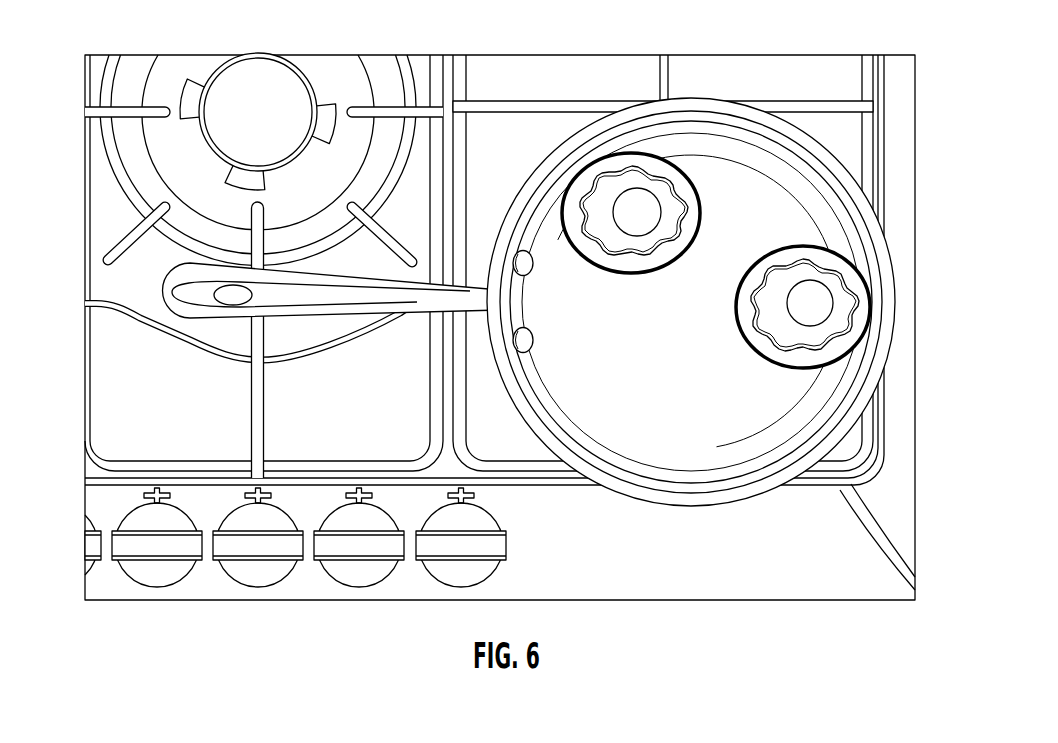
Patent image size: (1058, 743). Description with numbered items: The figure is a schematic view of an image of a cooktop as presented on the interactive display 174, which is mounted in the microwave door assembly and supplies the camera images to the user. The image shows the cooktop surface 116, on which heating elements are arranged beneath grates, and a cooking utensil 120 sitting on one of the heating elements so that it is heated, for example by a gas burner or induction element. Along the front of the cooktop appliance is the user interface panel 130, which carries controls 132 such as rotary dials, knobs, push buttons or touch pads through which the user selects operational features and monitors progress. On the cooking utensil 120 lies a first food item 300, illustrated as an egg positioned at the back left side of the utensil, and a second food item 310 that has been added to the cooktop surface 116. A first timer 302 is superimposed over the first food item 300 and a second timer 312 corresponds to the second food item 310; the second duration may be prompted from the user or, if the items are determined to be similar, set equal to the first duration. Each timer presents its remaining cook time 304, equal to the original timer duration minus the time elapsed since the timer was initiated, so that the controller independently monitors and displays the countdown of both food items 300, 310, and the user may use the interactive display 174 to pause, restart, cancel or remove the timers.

The cooktop surface 116 is at (900, 145).
The cooking utensil 120 is at (883, 348).
The user interface panel 130 is at (758, 562).
The controls 132 is at (506, 545).
The interactive display 174 is at (78, 284).
The first food item 300 is at (668, 188).
The first timer 302 is at (631, 141).
The remaining cook time 304 is at (792, 326).
The second food item 310 is at (840, 290).
The second timer 312 is at (832, 243).